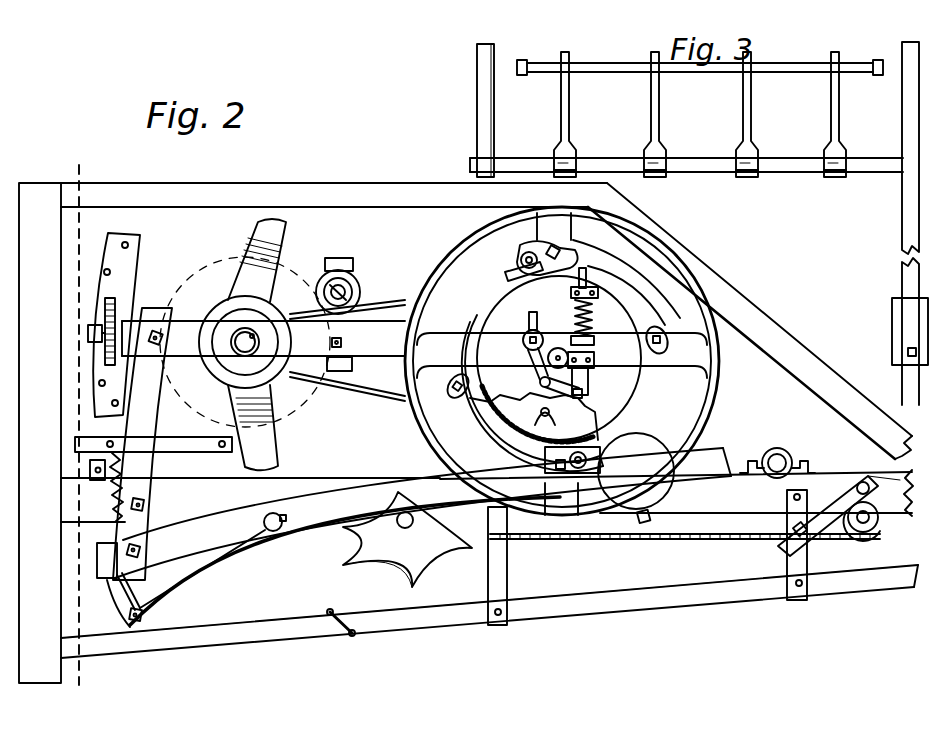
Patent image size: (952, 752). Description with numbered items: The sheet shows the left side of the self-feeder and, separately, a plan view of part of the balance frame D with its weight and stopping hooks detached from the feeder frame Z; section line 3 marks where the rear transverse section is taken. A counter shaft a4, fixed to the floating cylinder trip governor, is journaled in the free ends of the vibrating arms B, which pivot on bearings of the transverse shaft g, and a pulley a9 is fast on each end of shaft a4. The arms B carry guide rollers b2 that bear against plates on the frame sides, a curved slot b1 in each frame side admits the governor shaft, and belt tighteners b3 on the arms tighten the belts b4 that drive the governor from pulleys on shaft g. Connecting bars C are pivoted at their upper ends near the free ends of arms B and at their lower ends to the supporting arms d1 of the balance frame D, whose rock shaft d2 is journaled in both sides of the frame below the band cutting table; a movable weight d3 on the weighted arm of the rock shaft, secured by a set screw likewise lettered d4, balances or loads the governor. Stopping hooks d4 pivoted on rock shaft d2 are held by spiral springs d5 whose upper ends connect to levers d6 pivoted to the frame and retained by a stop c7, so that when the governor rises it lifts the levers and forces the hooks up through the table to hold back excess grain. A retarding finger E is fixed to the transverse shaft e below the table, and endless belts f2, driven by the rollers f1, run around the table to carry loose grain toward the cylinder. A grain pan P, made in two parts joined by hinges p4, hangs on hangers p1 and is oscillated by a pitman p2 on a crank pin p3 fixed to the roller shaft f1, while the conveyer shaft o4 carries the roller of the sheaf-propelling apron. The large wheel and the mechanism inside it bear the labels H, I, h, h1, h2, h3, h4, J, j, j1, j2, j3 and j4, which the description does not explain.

In FIG. 2, the feeder frame Z is at (468, 433).
In FIG. 2, the section line 3 is at (77, 424).
In FIG. 2, the guide rollers b2 is at (114, 325).
In FIG. 2, the connecting bars C is at (142, 444).
In FIG. 2, the lever d6 is at (110, 440).
In FIG. 2, the stop c7 is at (90, 470).
In FIG. 2, the spiral springs d5 is at (108, 497).
In FIG. 2, the vibrating arms B is at (263, 341).
In FIG. 2, the counter shaft a4 is at (243, 338).
In FIG. 2, the pulley a9 is at (241, 347).
In FIG. 2, the curved slot b1 is at (257, 344).
In FIG. 2, the belt tightener b3 is at (352, 275).
In FIG. 2, the belts b4 is at (360, 300).
In FIG. 2, the wheel H is at (480, 235).
In FIG. 2, the inner disk I is at (559, 358).
In FIG. 2, the brake band h1 is at (598, 268).
In FIG. 2, the band segment h2 is at (544, 416).
In FIG. 2, the lining h3 is at (538, 414).
In FIG. 2, the brake shoe h is at (448, 386).
In FIG. 2, the bracket h4 is at (558, 367).
In FIG. 2, the movable weight d3 is at (636, 471).
In FIG. 3, the movable weight d3 is at (892, 326).
In FIG. 2, the pin j1 is at (519, 333).
In FIG. 2, the roller j4 is at (556, 349).
In FIG. 2, the transverse shaft g is at (528, 366).
In FIG. 2, the lever J is at (528, 320).
In FIG. 2, the blocks j2 is at (570, 295).
In FIG. 2, the spring j3 is at (590, 314).
In FIG. 2, the slide j is at (583, 381).
In FIG. 2, the supporting arms d1 is at (423, 513).
In FIG. 3, the supporting arms d1 is at (477, 110).
In FIG. 2, the stopping hooks d4 is at (176, 588).
In FIG. 3, the stopping hooks d4 is at (561, 113).
In FIG. 2, the rock shaft d2 is at (273, 528).
In FIG. 3, the rock shaft d2 is at (680, 174).
In FIG. 2, the retarding finger E is at (407, 539).
In FIG. 2, the transverse shaft e is at (393, 523).
In FIG. 2, the balance frame D is at (396, 492).
In FIG. 3, the balance frame D is at (900, 214).
In FIG. 2, the grain pan P is at (590, 615).
In FIG. 2, the hangers p1 is at (508, 555).
In FIG. 2, the hinges p4 is at (333, 610).
In FIG. 2, the endless belts f2 is at (620, 538).
In FIG. 2, the conveyer shaft o4 is at (786, 458).
In FIG. 2, the pitman p2 is at (782, 542).
In FIG. 2, the roller f1 is at (880, 522).
In FIG. 2, the crank pin p3 is at (886, 489).